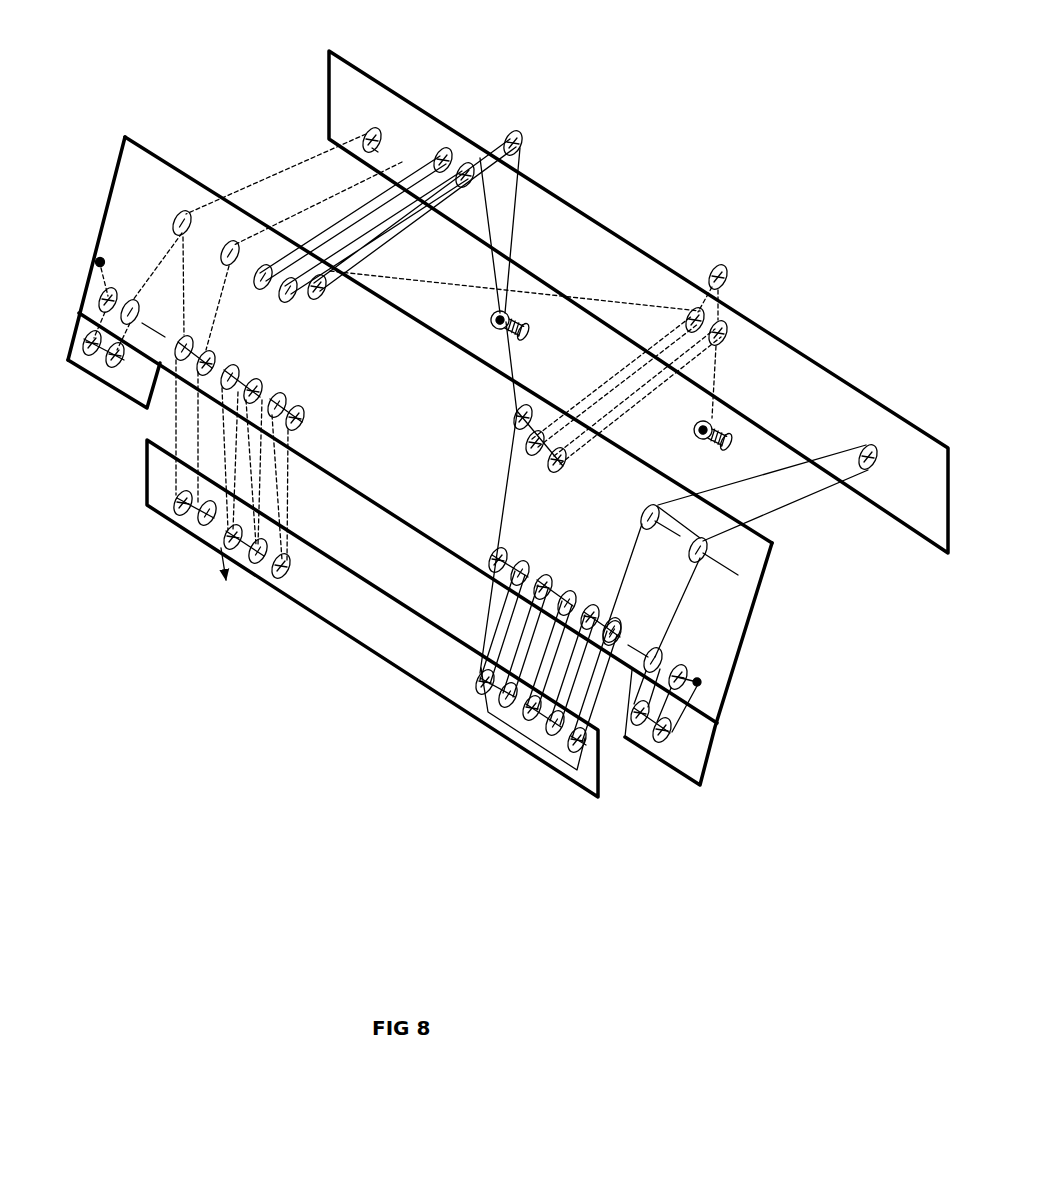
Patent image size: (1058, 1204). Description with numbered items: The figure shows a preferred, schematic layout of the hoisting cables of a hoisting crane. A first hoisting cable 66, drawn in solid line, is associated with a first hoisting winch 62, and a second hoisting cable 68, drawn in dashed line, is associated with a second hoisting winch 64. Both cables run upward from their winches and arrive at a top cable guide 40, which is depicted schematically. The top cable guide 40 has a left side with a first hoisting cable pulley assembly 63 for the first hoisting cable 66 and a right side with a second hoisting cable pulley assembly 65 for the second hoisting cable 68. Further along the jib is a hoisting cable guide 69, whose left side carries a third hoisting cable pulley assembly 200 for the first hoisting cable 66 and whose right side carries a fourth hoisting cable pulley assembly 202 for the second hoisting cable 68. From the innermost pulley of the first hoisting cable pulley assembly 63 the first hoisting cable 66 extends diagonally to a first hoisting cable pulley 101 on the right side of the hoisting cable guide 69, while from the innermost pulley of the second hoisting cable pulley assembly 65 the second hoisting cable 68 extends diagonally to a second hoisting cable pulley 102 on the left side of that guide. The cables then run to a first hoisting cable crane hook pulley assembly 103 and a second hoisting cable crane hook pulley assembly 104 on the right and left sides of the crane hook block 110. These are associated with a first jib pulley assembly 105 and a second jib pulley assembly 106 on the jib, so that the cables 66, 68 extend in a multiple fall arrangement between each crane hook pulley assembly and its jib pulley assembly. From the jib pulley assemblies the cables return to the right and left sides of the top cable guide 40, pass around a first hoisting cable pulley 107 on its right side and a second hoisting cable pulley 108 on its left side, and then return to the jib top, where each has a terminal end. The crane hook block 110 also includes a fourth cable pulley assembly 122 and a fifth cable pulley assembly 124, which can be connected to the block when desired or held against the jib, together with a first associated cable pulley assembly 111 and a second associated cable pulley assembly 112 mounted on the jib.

The top cable guide 40 is at (653, 259).
The first hoisting cable pulley assembly 63 is at (477, 118).
The second hoisting cable pulley 108 is at (366, 135).
The second associated cable pulley assembly 112 is at (117, 252).
The fourth cable pulley assembly 122 is at (74, 367).
The second jib pulley assembly 106 is at (246, 360).
The second hoisting cable crane hook pulley assembly 104 is at (191, 565).
The third hoisting cable pulley assembly 200 is at (290, 322).
The second hoisting cable pulley 102 is at (325, 300).
The first hoisting cable 66 is at (527, 217).
The first hoisting winch 62 is at (537, 332).
The first hoisting cable pulley 101 is at (515, 412).
The fourth hoisting cable pulley assembly 202 is at (538, 472).
The second hoisting cable pulley assembly 65 is at (737, 248).
The second hoisting cable 68 is at (717, 384).
The second hoisting winch 64 is at (694, 430).
The first hoisting cable pulley 107 is at (874, 470).
The first jib pulley assembly 105 is at (573, 570).
The hoisting cable guide 69 is at (752, 600).
The first associated cable pulley assembly 111 is at (700, 658).
The fifth cable pulley assembly 124 is at (651, 760).
The first hoisting cable crane hook pulley assembly 103 is at (497, 763).
The crane hook block 110 is at (340, 632).